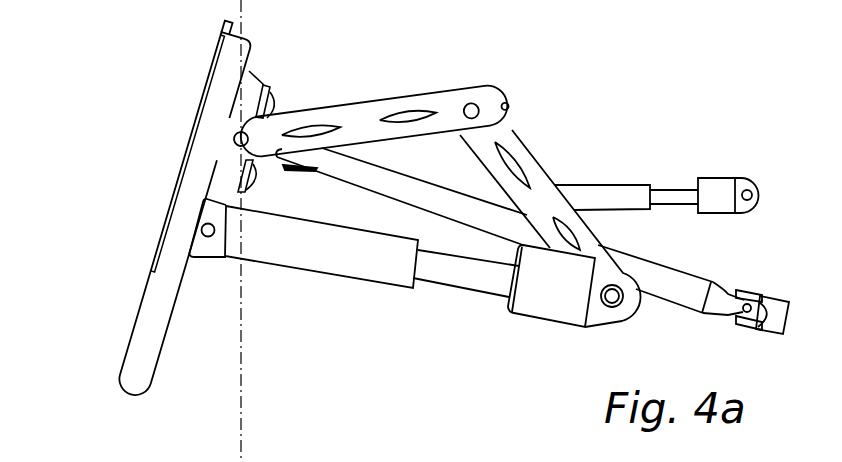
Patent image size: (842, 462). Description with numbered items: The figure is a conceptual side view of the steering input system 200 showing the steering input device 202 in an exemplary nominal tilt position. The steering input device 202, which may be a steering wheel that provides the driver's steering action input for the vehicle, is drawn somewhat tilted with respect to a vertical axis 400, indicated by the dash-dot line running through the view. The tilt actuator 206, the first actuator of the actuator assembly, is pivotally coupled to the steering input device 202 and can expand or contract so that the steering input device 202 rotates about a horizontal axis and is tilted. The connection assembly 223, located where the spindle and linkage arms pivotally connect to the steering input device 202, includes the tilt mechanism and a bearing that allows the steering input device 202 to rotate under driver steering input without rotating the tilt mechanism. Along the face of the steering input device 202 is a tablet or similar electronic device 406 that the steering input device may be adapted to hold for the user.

The steering input system 200 is at (586, 84).
The steering input device 202 is at (130, 292).
The tilt actuator 206 is at (368, 278).
The connection assembly 223 is at (267, 83).
The vertical axis 400 is at (242, 5).
The electronic device 406 is at (219, 33).